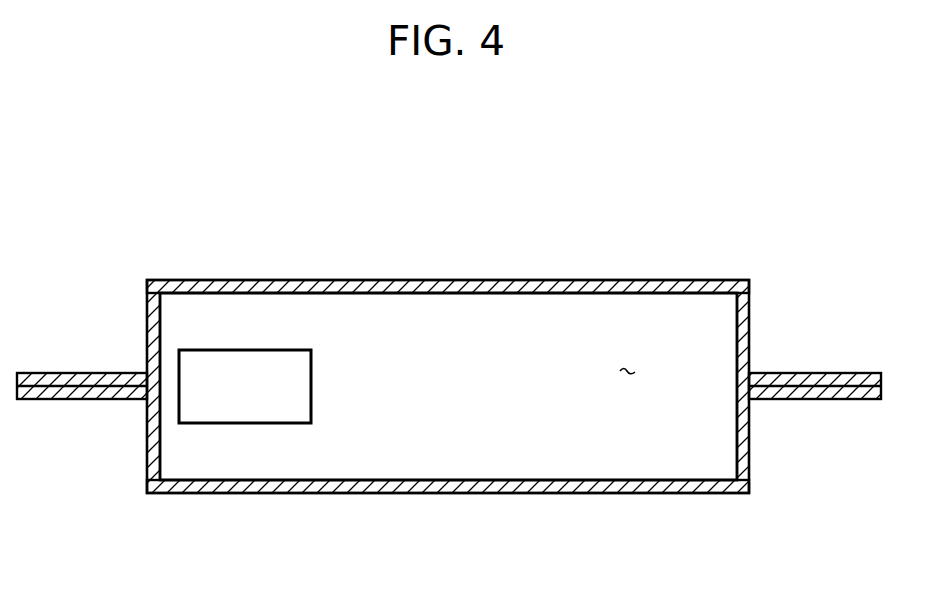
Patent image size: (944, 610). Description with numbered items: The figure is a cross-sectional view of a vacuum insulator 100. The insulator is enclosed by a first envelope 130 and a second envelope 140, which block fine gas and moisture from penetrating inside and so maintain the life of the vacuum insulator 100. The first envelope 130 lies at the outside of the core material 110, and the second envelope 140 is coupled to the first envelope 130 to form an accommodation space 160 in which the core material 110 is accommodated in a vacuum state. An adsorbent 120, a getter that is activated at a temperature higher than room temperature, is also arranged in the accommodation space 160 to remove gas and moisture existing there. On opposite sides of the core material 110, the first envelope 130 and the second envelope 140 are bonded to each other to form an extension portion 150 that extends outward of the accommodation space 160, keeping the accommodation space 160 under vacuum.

The vacuum insulator 100 is at (180, 169).
The core material 110 is at (346, 316).
The adsorbent 120 is at (239, 365).
The first envelope 130 is at (469, 281).
The second envelope 140 is at (486, 494).
The extension portion 150 is at (839, 364).
The accommodation space 160 is at (627, 368).